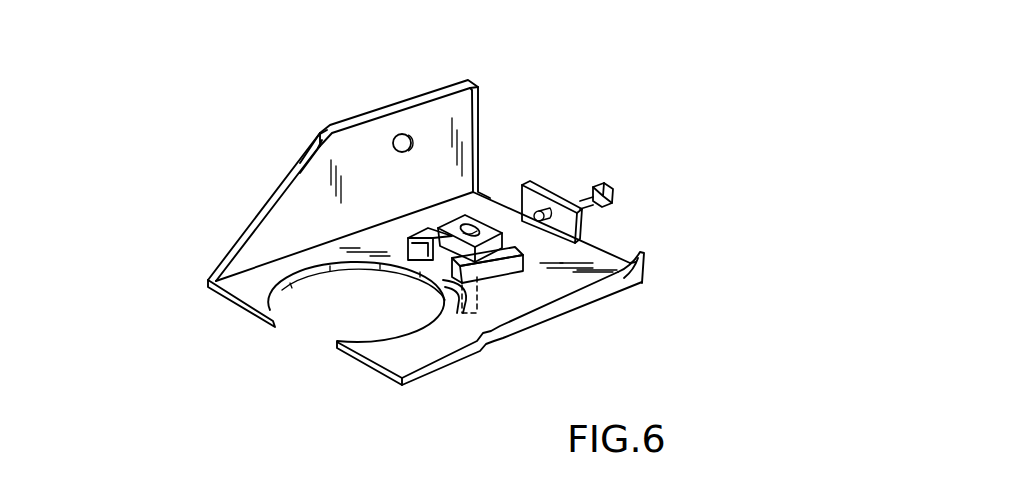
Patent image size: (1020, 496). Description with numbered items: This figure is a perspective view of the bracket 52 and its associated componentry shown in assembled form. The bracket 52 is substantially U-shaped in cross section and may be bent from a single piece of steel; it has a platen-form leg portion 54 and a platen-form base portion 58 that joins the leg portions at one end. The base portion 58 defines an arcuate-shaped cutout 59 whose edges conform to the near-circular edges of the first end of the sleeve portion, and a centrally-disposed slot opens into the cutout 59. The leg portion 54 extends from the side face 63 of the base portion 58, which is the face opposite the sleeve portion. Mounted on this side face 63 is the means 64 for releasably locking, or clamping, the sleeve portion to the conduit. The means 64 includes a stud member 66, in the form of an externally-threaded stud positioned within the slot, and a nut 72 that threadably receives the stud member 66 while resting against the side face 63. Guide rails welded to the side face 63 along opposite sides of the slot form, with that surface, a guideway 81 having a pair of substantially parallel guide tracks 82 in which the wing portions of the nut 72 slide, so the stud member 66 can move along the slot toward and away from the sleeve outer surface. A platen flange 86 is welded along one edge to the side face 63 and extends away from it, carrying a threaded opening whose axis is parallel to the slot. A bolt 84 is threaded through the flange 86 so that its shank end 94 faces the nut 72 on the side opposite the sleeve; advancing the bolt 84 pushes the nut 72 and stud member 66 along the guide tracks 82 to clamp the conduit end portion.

The bracket 52 is at (582, 310).
The leg portion 54 is at (250, 223).
The base portion 58 is at (232, 303).
The arcuate-shaped cutout 59 is at (287, 291).
The side face 63 is at (592, 260).
The means for releasably locking 64 is at (637, 131).
The stud member 66 is at (458, 312).
The nut 72 is at (455, 218).
The guideway 81 is at (293, 350).
The guide tracks 82 is at (410, 262).
The bolt 84 is at (593, 182).
The platen flange 86 is at (540, 182).
The shank end 94 is at (582, 236).